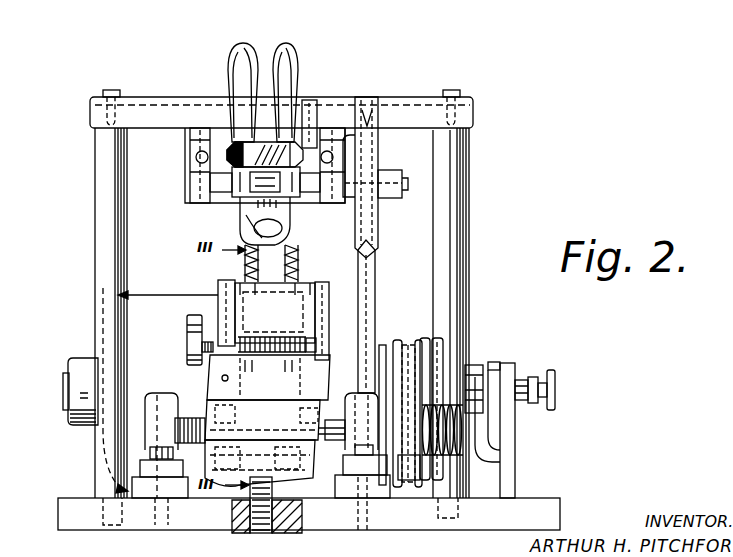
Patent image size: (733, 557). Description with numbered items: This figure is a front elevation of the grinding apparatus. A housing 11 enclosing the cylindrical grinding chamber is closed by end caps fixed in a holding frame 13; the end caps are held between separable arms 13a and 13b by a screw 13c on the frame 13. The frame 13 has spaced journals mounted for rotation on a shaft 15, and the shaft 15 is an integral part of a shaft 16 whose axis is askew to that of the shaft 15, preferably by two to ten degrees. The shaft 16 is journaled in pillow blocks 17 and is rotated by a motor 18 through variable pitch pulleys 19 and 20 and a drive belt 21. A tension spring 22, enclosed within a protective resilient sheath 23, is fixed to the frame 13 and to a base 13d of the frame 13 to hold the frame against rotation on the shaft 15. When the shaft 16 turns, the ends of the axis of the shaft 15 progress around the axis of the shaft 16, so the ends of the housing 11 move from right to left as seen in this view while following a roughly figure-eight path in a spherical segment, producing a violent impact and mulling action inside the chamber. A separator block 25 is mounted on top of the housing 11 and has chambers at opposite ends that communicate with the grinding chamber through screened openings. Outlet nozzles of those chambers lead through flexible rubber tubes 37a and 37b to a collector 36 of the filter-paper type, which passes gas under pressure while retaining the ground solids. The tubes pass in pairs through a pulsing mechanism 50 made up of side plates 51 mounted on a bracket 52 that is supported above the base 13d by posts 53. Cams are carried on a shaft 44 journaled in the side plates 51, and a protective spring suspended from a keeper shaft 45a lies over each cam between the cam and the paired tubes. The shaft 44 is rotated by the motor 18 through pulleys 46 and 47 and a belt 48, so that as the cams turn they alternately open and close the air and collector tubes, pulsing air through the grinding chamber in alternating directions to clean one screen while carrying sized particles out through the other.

The housing 11 is at (250, 303).
The holding frame 13 is at (208, 403).
The separable arm 13a is at (222, 285).
The separable arm 13b is at (335, 293).
The screw 13c is at (188, 337).
The base 13d is at (66, 508).
The shaft 15 is at (268, 377).
The shaft 16 is at (185, 430).
The pillow blocks 17 is at (162, 395).
The motor 18 is at (145, 300).
The variable pitch pulley 19 is at (428, 340).
The variable pitch pulley 20 is at (425, 470).
The drive belt 21 is at (405, 488).
The tension spring 22 is at (238, 512).
The protective resilient sheath 23 is at (308, 485).
The separator block 25 is at (312, 280).
The collector 36 is at (242, 220).
The flexible rubber tube 37a is at (292, 47).
The flexible rubber tube 37b is at (235, 45).
The shaft 44 is at (404, 185).
The keeper shaft 45a is at (306, 120).
The pulley 46 is at (380, 230).
The pulley 47 is at (382, 352).
The belt 48 is at (370, 300).
The pulsing mechanism 50 is at (218, 78).
The side plates 51 is at (333, 105).
The bracket 52 is at (403, 100).
The posts 53 is at (95, 215).